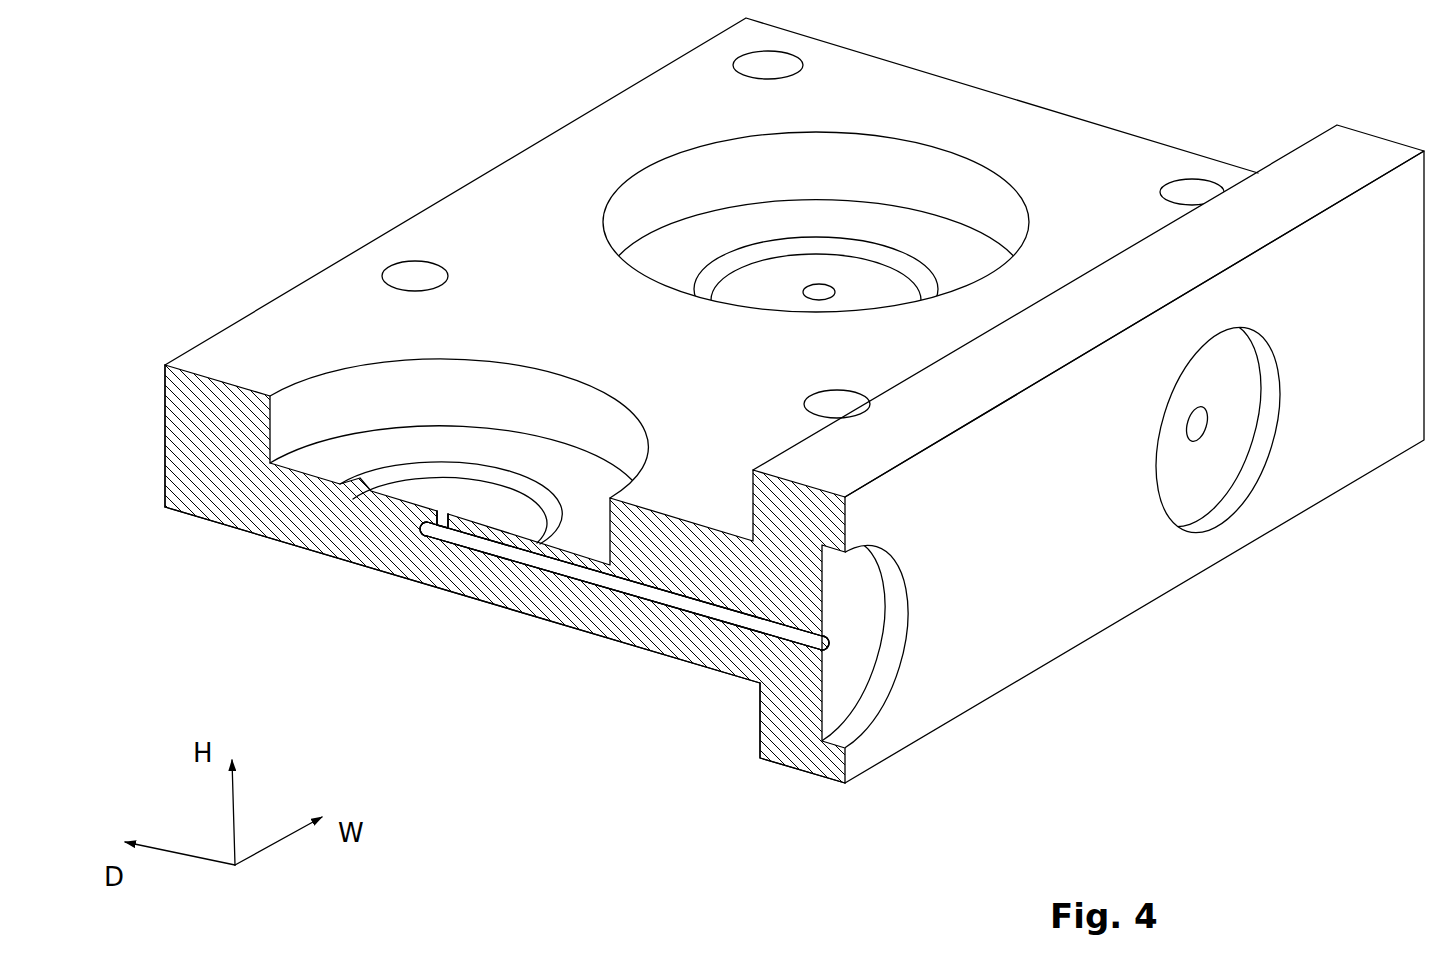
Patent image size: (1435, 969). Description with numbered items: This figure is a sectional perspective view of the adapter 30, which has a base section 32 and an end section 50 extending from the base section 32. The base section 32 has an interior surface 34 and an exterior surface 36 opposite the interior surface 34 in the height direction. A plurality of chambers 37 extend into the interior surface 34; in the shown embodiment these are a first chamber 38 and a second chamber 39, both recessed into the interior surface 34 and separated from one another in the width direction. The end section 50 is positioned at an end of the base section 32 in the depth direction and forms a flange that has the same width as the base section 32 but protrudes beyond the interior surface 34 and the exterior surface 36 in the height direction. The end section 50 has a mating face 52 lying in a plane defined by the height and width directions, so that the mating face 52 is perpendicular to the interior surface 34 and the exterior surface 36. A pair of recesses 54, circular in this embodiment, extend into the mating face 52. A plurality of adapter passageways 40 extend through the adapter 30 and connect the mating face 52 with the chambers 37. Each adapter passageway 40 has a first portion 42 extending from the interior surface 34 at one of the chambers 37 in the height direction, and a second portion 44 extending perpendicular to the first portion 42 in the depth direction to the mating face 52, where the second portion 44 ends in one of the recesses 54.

The adapter 30 is at (243, 85).
The base section 32 is at (317, 557).
The interior surface 34 is at (470, 195).
The exterior surface 36 is at (183, 516).
The chambers 37 is at (673, 295).
The first chamber 38 is at (985, 205).
The second chamber 39 is at (333, 408).
The adapter passageways 40 is at (819, 283).
The first portion 42 is at (437, 527).
The second portion 44 is at (617, 589).
The end section 50 is at (806, 776).
The mating face 52 is at (1000, 676).
The recesses 54 is at (882, 716).